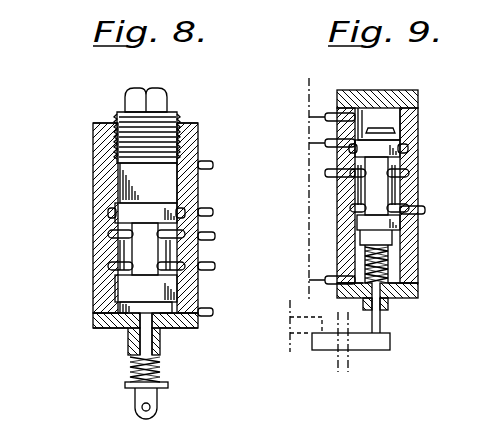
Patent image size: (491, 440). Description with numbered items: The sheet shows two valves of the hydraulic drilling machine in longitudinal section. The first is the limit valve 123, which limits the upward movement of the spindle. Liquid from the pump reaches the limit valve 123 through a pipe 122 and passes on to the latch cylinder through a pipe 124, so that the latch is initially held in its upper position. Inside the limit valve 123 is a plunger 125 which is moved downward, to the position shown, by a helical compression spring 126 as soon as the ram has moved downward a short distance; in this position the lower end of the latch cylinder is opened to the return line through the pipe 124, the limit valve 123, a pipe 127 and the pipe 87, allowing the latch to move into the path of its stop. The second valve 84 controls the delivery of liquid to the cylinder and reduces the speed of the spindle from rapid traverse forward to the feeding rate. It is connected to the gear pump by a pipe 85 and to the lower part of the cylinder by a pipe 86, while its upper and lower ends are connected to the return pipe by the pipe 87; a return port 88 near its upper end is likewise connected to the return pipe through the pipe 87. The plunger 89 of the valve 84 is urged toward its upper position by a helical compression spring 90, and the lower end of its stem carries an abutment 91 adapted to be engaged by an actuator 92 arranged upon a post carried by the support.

In FIG. 8, the pipe 122 is at (205, 212).
In FIG. 8, the limit valve 123 is at (93, 129).
In FIG. 8, the pipe 124 is at (205, 236).
In FIG. 8, the plunger 125 is at (135, 214).
In FIG. 8, the helical compression spring 126 is at (133, 366).
In FIG. 8, the pipe 127 is at (203, 263).
In FIG. 9, the valve 84 is at (418, 108).
In FIG. 9, the pipe 85 is at (425, 210).
In FIG. 9, the pipe 86 is at (322, 176).
In FIG. 9, the pipe 87 is at (309, 242).
In FIG. 9, the return port 88 is at (402, 148).
In FIG. 9, the plunger 89 is at (400, 232).
In FIG. 9, the helical compression spring 90 is at (390, 266).
In FIG. 9, the abutment 91 is at (390, 345).
In FIG. 9, the actuator 92 is at (298, 327).